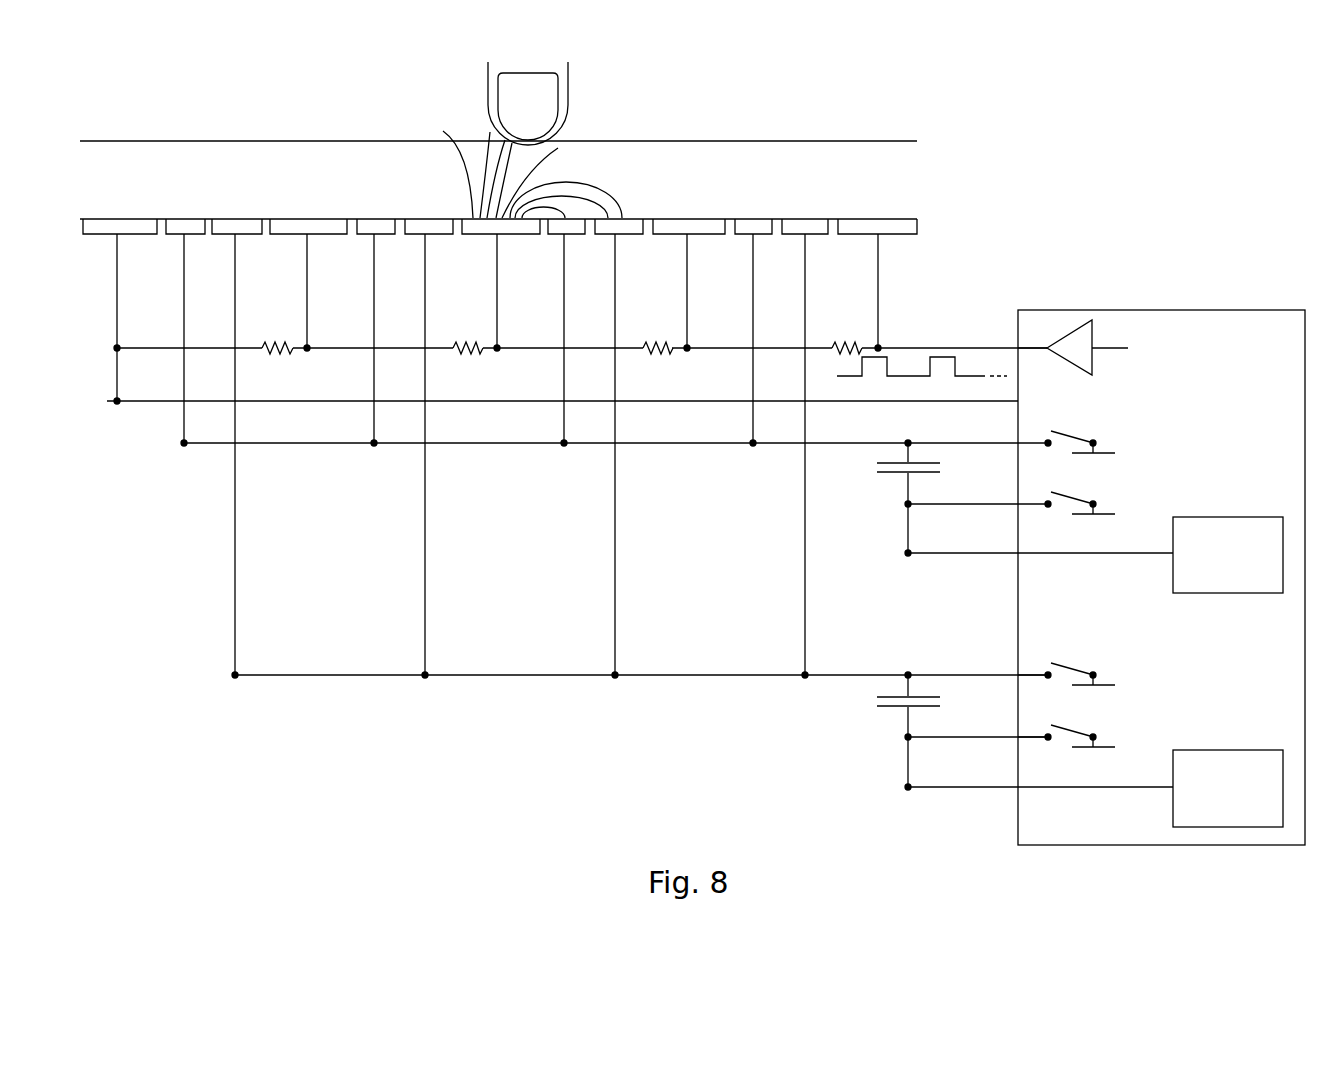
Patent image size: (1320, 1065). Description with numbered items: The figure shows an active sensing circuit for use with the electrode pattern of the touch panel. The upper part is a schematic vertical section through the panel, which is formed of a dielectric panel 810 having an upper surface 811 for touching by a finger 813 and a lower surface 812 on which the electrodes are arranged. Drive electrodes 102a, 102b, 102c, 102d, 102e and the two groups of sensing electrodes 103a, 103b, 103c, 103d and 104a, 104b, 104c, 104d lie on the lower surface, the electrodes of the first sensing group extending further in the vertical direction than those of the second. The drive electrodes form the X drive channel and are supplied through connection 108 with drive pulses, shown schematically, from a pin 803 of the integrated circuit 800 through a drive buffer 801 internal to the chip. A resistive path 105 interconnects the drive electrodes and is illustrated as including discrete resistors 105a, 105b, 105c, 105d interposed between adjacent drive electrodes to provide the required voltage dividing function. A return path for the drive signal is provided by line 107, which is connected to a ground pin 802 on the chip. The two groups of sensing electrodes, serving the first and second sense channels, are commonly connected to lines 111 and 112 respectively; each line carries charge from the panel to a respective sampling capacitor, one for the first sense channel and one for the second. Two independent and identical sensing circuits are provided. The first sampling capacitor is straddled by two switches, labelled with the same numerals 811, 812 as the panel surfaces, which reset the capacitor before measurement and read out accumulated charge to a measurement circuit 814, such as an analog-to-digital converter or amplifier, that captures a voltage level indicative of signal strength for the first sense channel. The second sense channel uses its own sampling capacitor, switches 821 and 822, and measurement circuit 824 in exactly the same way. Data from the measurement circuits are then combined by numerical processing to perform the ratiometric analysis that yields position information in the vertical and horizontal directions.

The drive electrode 102a is at (878, 218).
The drive electrode 102b is at (686, 218).
The drive electrode 102c is at (478, 236).
The drive electrode 102d is at (305, 218).
The drive electrode 102e is at (116, 218).
The sensing electrode 103a is at (803, 218).
The sensing electrode 103b is at (620, 237).
The sensing electrode 103c is at (423, 218).
The sensing electrode 103d is at (233, 218).
The sensing electrode 104a is at (752, 218).
The sensing electrode 104b is at (558, 237).
The sensing electrode 104c is at (373, 218).
The sensing electrode 104d is at (183, 218).
The resistive path 105 is at (735, 345).
The discrete resistor 105a is at (850, 342).
The discrete resistor 105b is at (645, 352).
The discrete resistor 105c is at (455, 352).
The discrete resistor 105d is at (265, 352).
The line 107 is at (147, 403).
The connection 108 is at (930, 343).
The line 111 is at (830, 675).
The line 112 is at (830, 443).
The integrated circuit 800 is at (1018, 808).
The drive buffer 801 is at (1067, 323).
The ground pin 802 is at (1075, 400).
The pin 803 is at (1033, 347).
The dielectric panel 810 is at (792, 158).
The upper surface 811 is at (228, 141).
The lower surface 812 is at (158, 237).
The finger 813 is at (489, 106).
The measurement circuit 814 is at (1245, 750).
The switch 821 is at (1082, 437).
The switch 822 is at (1082, 498).
The measurement circuit 824 is at (1252, 594).